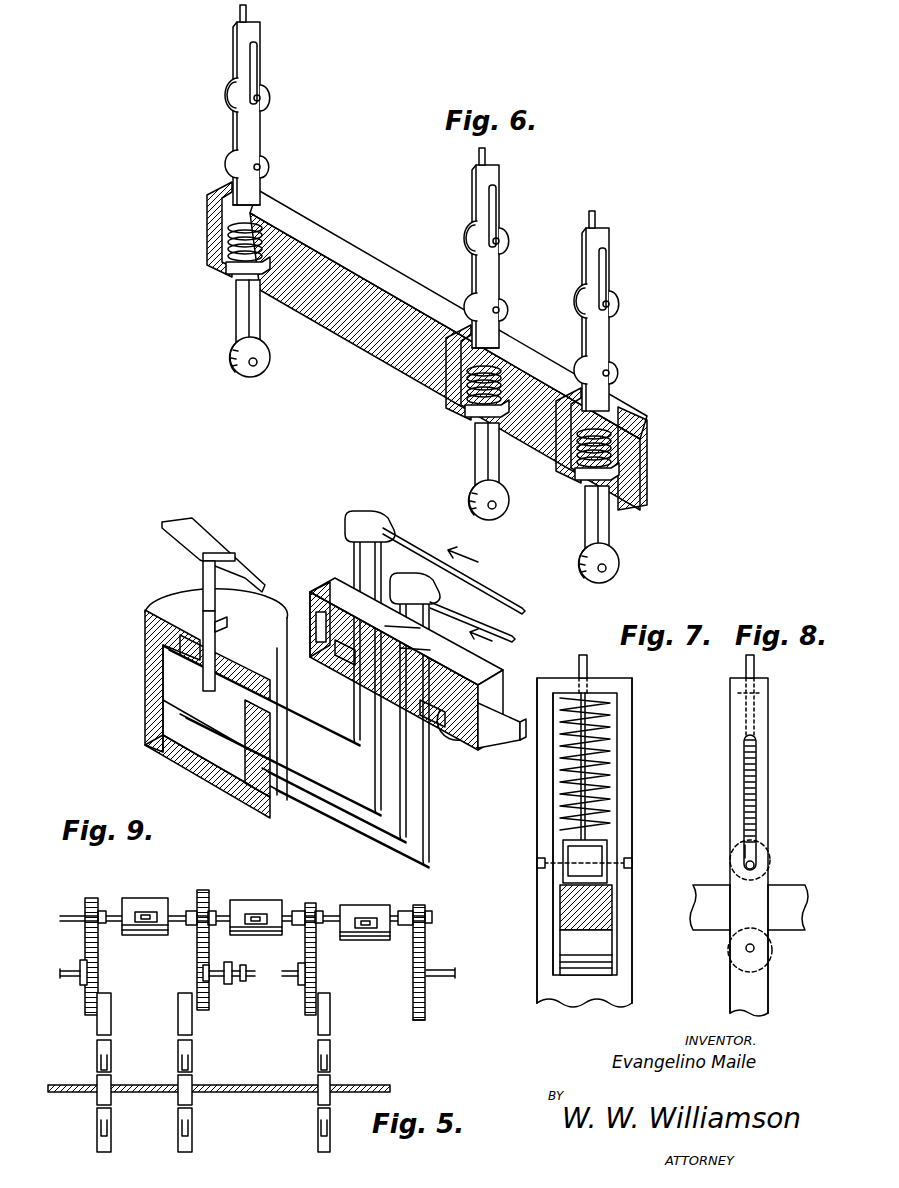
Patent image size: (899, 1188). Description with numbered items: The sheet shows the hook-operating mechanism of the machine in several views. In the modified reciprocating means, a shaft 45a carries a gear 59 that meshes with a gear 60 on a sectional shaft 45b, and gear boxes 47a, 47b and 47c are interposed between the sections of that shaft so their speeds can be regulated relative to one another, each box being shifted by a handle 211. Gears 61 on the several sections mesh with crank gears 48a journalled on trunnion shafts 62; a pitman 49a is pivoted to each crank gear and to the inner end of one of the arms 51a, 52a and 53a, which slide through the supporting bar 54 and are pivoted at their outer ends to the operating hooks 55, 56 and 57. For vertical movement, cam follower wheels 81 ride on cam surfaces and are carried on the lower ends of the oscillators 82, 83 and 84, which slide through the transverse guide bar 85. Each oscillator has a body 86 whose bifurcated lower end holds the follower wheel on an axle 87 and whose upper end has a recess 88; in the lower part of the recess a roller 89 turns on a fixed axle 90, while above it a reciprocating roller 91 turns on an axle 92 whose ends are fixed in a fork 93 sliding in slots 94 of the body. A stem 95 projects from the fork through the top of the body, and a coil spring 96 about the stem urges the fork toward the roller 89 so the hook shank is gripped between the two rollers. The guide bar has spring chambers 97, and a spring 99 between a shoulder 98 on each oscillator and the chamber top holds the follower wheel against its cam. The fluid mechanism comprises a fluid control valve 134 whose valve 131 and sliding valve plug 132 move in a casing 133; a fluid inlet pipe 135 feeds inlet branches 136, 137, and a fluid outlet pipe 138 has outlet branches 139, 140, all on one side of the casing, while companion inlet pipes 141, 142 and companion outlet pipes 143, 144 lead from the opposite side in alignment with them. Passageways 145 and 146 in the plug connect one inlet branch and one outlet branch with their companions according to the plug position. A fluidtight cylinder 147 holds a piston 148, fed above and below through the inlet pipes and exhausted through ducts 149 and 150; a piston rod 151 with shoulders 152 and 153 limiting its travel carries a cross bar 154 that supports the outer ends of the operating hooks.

In FIG. 5, the shaft 45a is at (447, 960).
In FIG. 5, the sectional shaft 45b is at (246, 896).
In FIG. 5, the gear box 47a is at (372, 903).
In FIG. 5, the gear box 47b is at (256, 900).
In FIG. 5, the gear box 47c is at (147, 899).
In FIG. 5, the crank gear 48a is at (188, 1013).
In FIG. 5, the pitman 49a is at (193, 1050).
In FIG. 5, the arm 51a is at (343, 1098).
In FIG. 5, the arm 52a is at (208, 1097).
In FIG. 5, the arm 53a is at (127, 1097).
In FIG. 5, the supporting bar 54 is at (216, 1099).
In FIG. 7, the operating hook 55 is at (519, 840).
In FIG. 8, the operating hook 55 is at (739, 889).
In FIG. 5, the operating hook 55 is at (304, 1132).
In FIG. 5, the operating hook 56 is at (170, 1132).
In FIG. 5, the operating hook 57 is at (83, 1131).
In FIG. 5, the gear 59 is at (400, 1008).
In FIG. 5, the gear 60 is at (428, 943).
In FIG. 5, the gear 61 is at (205, 940).
In FIG. 5, the trunnion shaft 62 is at (174, 956).
In FIG. 6, the cam follower wheel 81 is at (402, 460).
In FIG. 6, the oscillator 82 is at (451, 421).
In FIG. 7, the oscillator 82 is at (558, 842).
In FIG. 8, the oscillator 82 is at (730, 971).
In FIG. 6, the oscillator 83 is at (506, 328).
In FIG. 6, the oscillator 84 is at (270, 187).
In FIG. 6, the guide bar 85 is at (448, 350).
In FIG. 6, the body 86 is at (421, 216).
In FIG. 7, the body 86 is at (604, 842).
In FIG. 8, the body 86 is at (729, 847).
In FIG. 6, the axle 87 is at (455, 461).
In FIG. 6, the recess 88 is at (411, 216).
In FIG. 7, the recess 88 is at (529, 834).
In FIG. 8, the recess 88 is at (772, 950).
In FIG. 6, the roller 89 is at (451, 261).
In FIG. 7, the roller 89 is at (545, 952).
In FIG. 8, the roller 89 is at (723, 926).
In FIG. 6, the axle 90 is at (452, 266).
In FIG. 8, the axle 90 is at (726, 963).
In FIG. 6, the reciprocating roller 91 is at (420, 198).
In FIG. 7, the reciprocating roller 91 is at (612, 850).
In FIG. 8, the reciprocating roller 91 is at (768, 848).
In FIG. 6, the axle 92 is at (465, 192).
In FIG. 7, the axle 92 is at (564, 860).
In FIG. 8, the axle 92 is at (780, 865).
In FIG. 7, the fork 93 is at (555, 873).
In FIG. 8, the fork 93 is at (716, 837).
In FIG. 6, the slot 94 is at (458, 172).
In FIG. 8, the slot 94 is at (725, 802).
In FIG. 6, the stem 95 is at (419, 116).
In FIG. 7, the stem 95 is at (566, 741).
In FIG. 8, the stem 95 is at (725, 693).
In FIG. 7, the coil spring 96 is at (611, 758).
In FIG. 8, the coil spring 96 is at (724, 791).
In FIG. 6, the spring chamber 97 is at (427, 346).
In FIG. 6, the shoulder 98 is at (423, 345).
In FIG. 6, the spring 99 is at (428, 368).
In FIG. 9, the valve 131 is at (502, 744).
In FIG. 9, the valve plug 132 is at (456, 748).
In FIG. 9, the casing 133 is at (314, 609).
In FIG. 9, the fluid control valve 134 is at (426, 664).
In FIG. 9, the fluid inlet pipe 135 is at (466, 571).
In FIG. 9, the inlet branch 136 is at (349, 528).
In FIG. 9, the inlet branch 137 is at (411, 578).
In FIG. 9, the fluid outlet pipe 138 is at (493, 622).
In FIG. 9, the outlet branch 139 is at (424, 629).
In FIG. 9, the outlet branch 140 is at (435, 652).
In FIG. 9, the companion inlet pipe 141 is at (261, 643).
In FIG. 9, the companion inlet pipe 142 is at (280, 678).
In FIG. 9, the companion outlet pipe 143 is at (368, 721).
In FIG. 9, the companion outlet pipe 144 is at (376, 734).
In FIG. 9, the passageway 145 is at (330, 659).
In FIG. 9, the passageway 146 is at (437, 728).
In FIG. 9, the fluidtight cylinder 147 is at (121, 698).
In FIG. 9, the piston 148 is at (168, 725).
In FIG. 9, the duct 149 is at (171, 755).
In FIG. 9, the duct 150 is at (187, 703).
In FIG. 9, the piston rod 151 is at (181, 582).
In FIG. 9, the shoulder 152 is at (226, 667).
In FIG. 9, the shoulder 153 is at (193, 645).
In FIG. 9, the cross bar 154 is at (213, 542).
In FIG. 5, the handle 211 is at (251, 933).